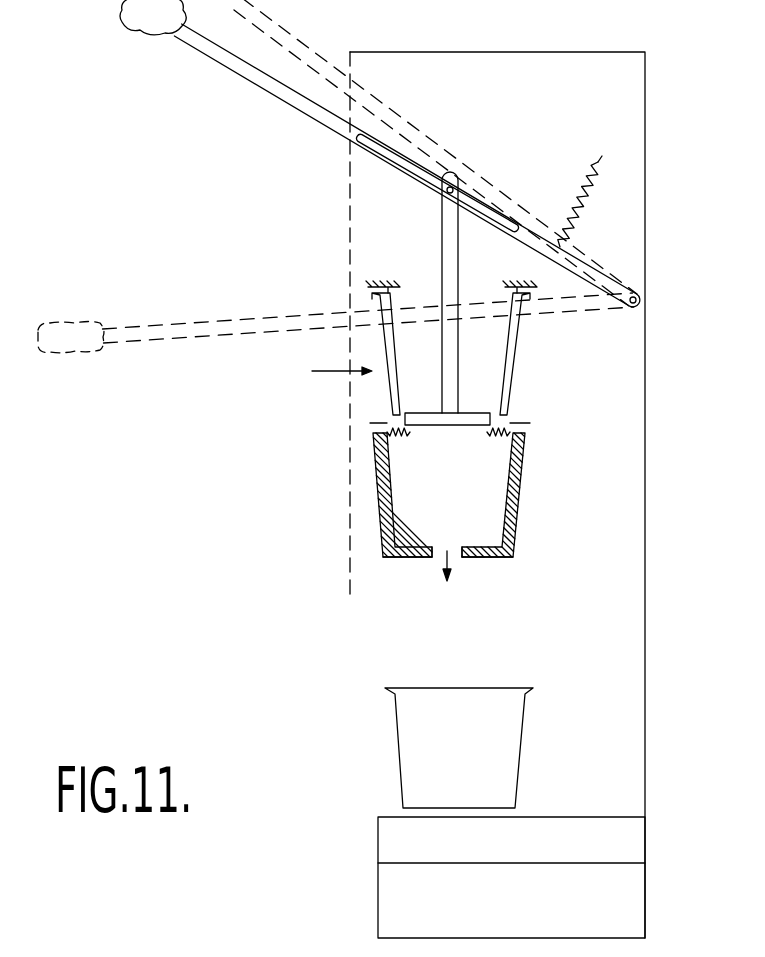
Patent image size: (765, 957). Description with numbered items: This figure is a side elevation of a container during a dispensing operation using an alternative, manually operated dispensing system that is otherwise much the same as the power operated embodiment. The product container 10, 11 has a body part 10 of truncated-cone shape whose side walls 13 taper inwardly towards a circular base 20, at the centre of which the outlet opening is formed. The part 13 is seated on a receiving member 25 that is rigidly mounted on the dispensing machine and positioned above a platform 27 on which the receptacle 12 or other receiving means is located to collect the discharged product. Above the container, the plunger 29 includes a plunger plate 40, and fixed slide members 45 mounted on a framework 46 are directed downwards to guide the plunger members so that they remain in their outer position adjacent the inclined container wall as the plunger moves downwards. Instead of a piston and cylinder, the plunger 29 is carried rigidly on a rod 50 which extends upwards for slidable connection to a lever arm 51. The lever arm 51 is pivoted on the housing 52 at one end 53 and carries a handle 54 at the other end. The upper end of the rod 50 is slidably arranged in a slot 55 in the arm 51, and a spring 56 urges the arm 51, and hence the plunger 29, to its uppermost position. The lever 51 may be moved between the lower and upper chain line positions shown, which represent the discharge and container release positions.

The body part 10 is at (515, 560).
The product container part 11 is at (448, 433).
The receptacle 12 is at (395, 725).
The side walls 13 is at (523, 485).
The circular base 20 is at (492, 558).
The receiving member 25 is at (385, 478).
The platform 27 is at (400, 837).
The plunger 29 is at (327, 370).
The plunger plate 40 is at (468, 422).
The fixed slide members 45 is at (395, 367).
The framework 46 is at (395, 285).
The rod 50 is at (447, 220).
The lever arm 51 is at (313, 118).
The housing 52 is at (630, 241).
The pivoted end 53 is at (640, 305).
The handle 54 is at (165, 38).
The slot 55 is at (397, 153).
The spring 56 is at (570, 207).